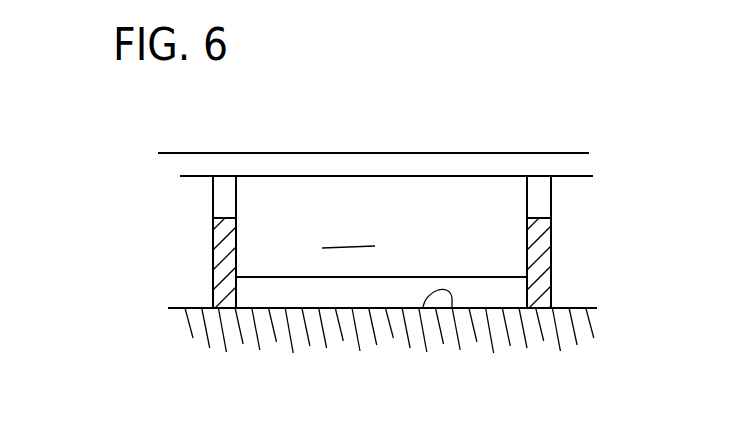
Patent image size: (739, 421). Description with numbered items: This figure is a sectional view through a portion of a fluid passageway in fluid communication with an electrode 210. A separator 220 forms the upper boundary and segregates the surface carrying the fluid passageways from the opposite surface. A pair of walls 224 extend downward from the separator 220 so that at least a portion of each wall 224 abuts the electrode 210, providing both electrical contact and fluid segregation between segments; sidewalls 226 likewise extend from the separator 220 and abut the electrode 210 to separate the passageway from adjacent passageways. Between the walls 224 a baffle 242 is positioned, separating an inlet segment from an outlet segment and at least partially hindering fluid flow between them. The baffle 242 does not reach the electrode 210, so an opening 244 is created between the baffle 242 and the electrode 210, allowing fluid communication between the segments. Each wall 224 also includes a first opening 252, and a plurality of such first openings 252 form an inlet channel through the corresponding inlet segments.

The electrode 210 is at (193, 307).
The separator 220 is at (475, 168).
The walls 224 is at (222, 260).
The sidewalls 226 is at (325, 293).
The baffle 242 is at (386, 226).
The opening 244 is at (423, 303).
The first opening 252 is at (222, 198).